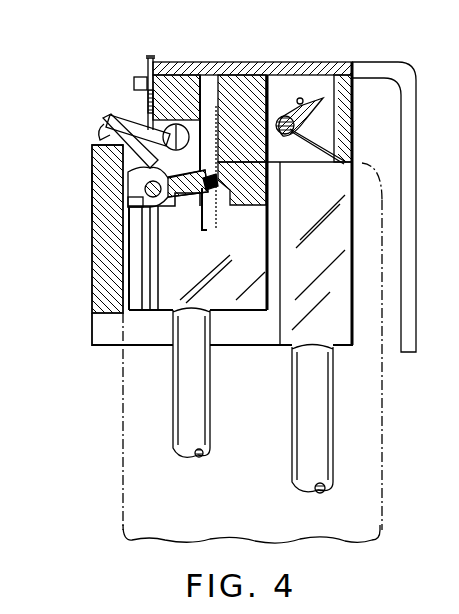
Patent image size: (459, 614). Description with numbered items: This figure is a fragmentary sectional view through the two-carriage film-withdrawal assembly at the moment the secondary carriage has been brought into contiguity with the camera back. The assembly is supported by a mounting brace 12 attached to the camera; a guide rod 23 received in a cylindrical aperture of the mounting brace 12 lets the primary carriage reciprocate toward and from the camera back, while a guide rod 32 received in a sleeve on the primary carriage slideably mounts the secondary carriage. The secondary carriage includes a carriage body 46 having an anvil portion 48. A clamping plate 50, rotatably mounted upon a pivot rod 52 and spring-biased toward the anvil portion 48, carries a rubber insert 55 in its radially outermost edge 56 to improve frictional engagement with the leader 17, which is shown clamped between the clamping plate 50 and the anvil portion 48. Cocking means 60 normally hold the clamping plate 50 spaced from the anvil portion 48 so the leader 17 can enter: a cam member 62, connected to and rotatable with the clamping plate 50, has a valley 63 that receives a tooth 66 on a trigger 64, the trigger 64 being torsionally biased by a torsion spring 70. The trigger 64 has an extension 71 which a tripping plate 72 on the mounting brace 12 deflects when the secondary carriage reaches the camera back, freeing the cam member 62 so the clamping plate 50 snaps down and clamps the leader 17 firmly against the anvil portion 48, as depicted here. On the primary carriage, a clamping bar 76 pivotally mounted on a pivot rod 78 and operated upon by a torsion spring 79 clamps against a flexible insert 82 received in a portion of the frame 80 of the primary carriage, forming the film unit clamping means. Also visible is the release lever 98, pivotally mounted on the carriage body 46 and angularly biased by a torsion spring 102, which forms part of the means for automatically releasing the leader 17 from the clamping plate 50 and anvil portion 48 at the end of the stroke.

The mounting brace 12 is at (102, 218).
The leader 17 is at (208, 228).
The guide rod 23 is at (310, 417).
The guide rod 32 is at (193, 378).
The carriage body 46 is at (178, 88).
The anvil portion 48 is at (250, 205).
The clamping plate 50 is at (181, 206).
The pivot rod 52 is at (132, 196).
The rubber insert 55 is at (206, 222).
The radially outermost edge 56 is at (268, 163).
The cocking means 60 is at (106, 98).
The cam member 62 is at (93, 192).
The valley 63 is at (148, 160).
The trigger 64 is at (143, 118).
The tooth 66 is at (130, 173).
The torsion spring 70 is at (112, 117).
The extension 71 is at (100, 137).
The tripping plate 72 is at (103, 150).
The clamping bar 76 is at (313, 98).
The pivot rod 78 is at (281, 133).
The torsion spring 79 is at (323, 150).
The frame 80 is at (362, 67).
The flexible insert 82 is at (360, 103).
The release lever 98 is at (152, 58).
The torsion spring 102 is at (147, 78).